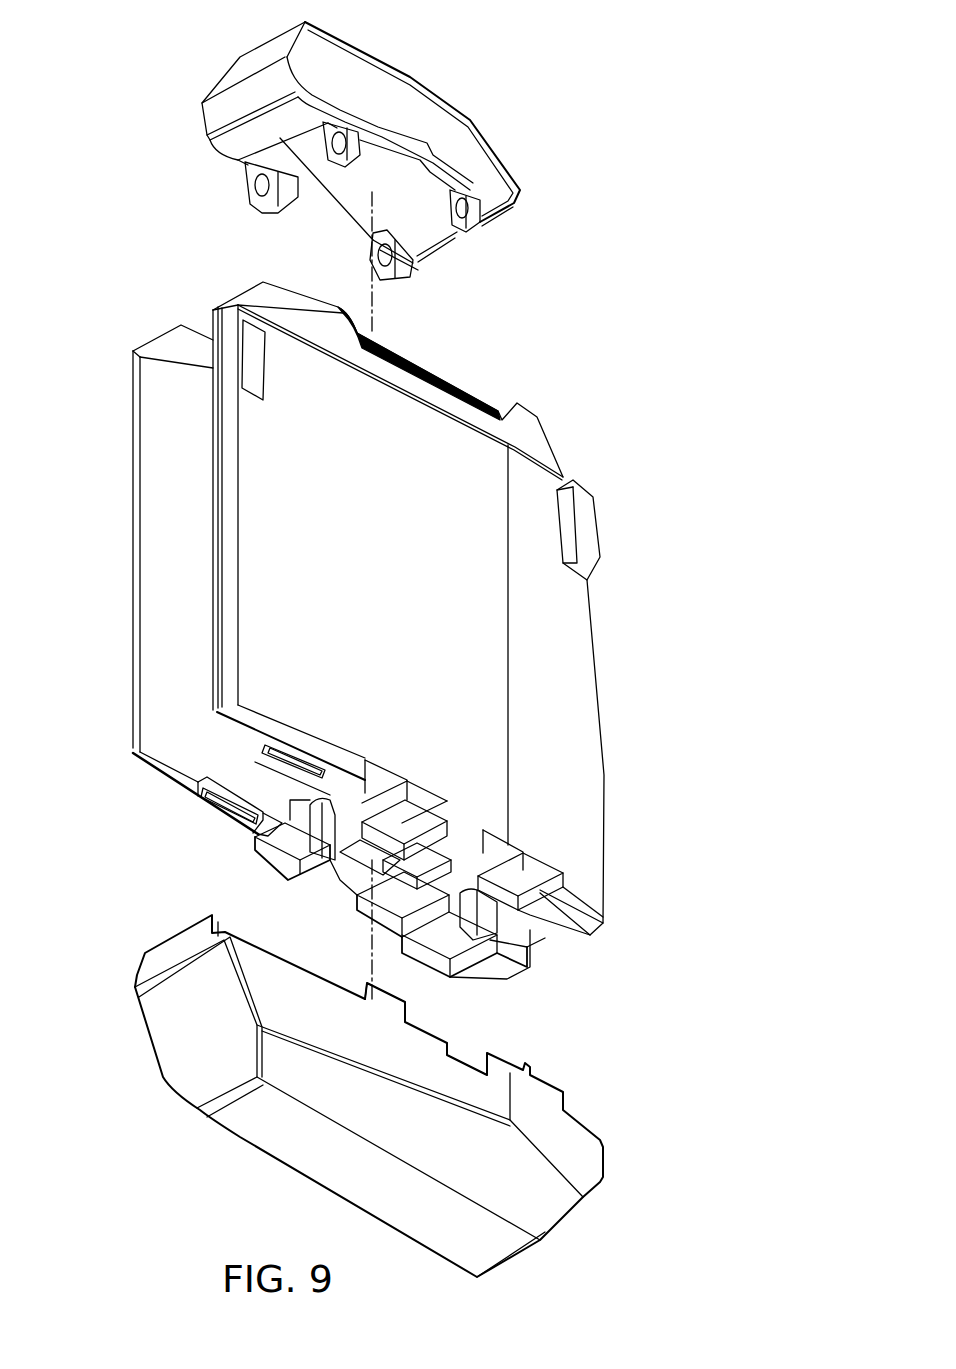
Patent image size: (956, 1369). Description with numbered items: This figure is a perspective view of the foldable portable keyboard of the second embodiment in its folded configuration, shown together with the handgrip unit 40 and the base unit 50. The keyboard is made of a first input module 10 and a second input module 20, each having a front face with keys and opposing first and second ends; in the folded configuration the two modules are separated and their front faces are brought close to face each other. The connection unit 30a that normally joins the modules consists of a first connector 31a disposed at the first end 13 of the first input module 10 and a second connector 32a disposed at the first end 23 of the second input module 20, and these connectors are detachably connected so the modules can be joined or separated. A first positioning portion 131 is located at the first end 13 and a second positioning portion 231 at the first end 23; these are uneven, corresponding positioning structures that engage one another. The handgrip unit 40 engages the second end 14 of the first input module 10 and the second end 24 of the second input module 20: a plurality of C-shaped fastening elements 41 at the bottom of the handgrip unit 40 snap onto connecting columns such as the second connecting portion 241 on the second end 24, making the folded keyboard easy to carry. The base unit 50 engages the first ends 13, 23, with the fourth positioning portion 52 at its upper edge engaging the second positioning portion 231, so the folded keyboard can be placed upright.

The first input module 10 is at (120, 602).
The second end of the first input module 14 is at (152, 333).
The first end of the first input module 13 is at (493, 987).
The first positioning portion 131 is at (323, 873).
The second input module 20 is at (612, 653).
The first end of the second input module 23 is at (572, 943).
The second positioning portion 231 is at (427, 817).
The second end of the second input module 24 is at (214, 292).
The second connecting portion 241 is at (410, 367).
The connection unit 30a is at (76, 803).
The first connector 31a is at (220, 813).
The second connector 32a is at (285, 754).
The handgrip unit 40 is at (505, 136).
The fastening elements 41 is at (257, 192).
The base unit 50 is at (598, 1108).
The fourth positioning portion 52 is at (383, 997).